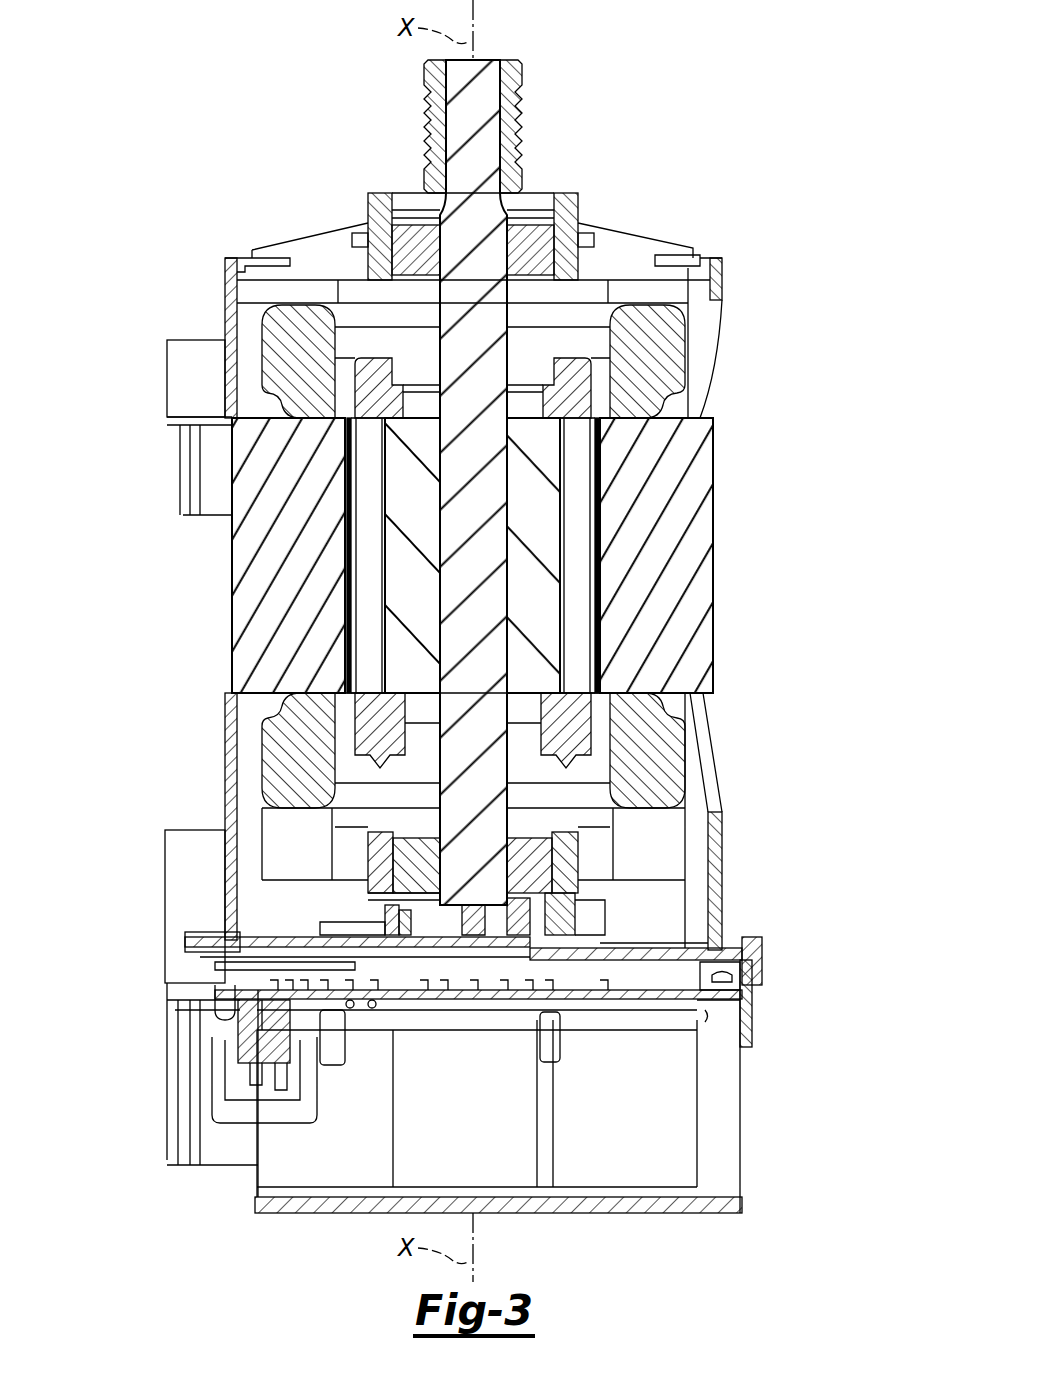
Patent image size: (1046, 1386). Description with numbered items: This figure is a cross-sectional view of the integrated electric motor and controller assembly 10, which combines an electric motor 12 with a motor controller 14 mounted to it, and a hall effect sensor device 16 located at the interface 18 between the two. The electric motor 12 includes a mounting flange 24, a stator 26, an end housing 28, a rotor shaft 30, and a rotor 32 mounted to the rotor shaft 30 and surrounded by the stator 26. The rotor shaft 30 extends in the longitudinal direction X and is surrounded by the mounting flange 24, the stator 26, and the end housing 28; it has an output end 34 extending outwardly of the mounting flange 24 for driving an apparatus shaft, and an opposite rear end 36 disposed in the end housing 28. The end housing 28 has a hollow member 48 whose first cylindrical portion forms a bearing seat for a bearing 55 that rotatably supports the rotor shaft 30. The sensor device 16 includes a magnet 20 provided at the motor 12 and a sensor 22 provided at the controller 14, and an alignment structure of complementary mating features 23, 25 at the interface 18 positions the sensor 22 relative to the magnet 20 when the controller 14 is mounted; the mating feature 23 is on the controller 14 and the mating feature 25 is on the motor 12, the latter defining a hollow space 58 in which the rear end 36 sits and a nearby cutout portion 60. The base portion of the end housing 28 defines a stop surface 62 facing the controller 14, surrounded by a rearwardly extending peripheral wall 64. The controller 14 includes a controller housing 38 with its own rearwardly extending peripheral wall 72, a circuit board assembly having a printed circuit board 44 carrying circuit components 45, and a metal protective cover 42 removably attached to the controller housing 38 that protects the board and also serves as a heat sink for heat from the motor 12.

The integrated electric motor and controller assembly 10 is at (216, 66).
The electric motor 12 is at (200, 598).
The motor controller 14 is at (160, 1123).
The hall effect sensor device 16 is at (415, 1000).
The interface 18 is at (160, 931).
The magnet 20 is at (515, 920).
The sensor 22 is at (385, 912).
The mating feature 23 is at (385, 918).
The mounting flange 24 is at (700, 345).
The mating feature 25 is at (527, 900).
The stator 26 is at (715, 625).
The end housing 28 is at (700, 745).
The rotor shaft 30 is at (491, 52).
The rotor 32 is at (560, 507).
The output end 34 is at (435, 122).
The rear end 36 is at (487, 606).
The controller housing 38 is at (750, 1013).
The protective cover 42 is at (740, 1215).
The printed circuit board 44 is at (635, 1000).
The circuit components 45 is at (360, 1040).
The hollow member 48 is at (368, 843).
The bearing 55 is at (525, 840).
The hollow space 58 is at (430, 905).
The cutout portion 60 is at (435, 935).
The stop surface 62 is at (680, 948).
The peripheral wall 64 is at (762, 955).
The peripheral wall 72 is at (745, 1047).